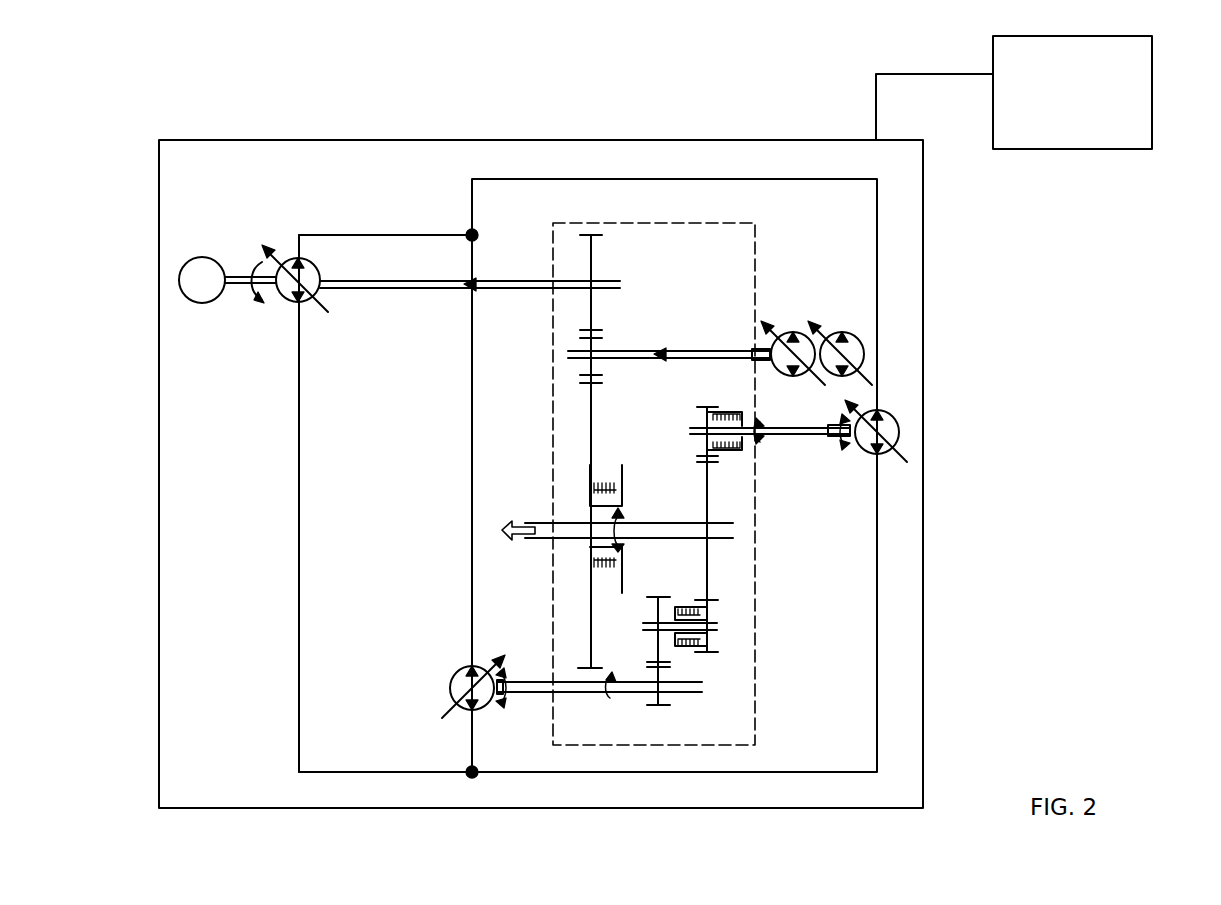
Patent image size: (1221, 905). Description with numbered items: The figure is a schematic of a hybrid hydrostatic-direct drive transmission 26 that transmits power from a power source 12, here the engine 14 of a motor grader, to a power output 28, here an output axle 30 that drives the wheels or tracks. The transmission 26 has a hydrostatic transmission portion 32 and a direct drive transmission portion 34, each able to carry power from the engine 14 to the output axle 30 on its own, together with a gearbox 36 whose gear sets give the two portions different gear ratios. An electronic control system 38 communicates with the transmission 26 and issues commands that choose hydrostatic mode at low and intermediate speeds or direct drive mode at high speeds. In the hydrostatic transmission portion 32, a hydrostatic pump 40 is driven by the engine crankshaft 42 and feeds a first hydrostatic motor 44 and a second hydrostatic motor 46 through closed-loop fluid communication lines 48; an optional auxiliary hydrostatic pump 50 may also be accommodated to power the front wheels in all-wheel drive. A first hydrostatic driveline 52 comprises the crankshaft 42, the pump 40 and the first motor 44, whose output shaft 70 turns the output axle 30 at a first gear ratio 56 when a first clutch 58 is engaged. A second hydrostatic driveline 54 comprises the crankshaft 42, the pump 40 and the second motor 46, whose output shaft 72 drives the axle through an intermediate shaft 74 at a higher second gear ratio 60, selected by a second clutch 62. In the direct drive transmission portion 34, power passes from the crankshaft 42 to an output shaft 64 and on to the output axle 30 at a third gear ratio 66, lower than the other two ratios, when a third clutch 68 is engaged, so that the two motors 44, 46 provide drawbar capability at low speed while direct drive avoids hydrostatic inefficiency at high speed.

The power source 12 is at (196, 262).
The engine 14 is at (222, 268).
The hybrid hydrostatic-direct drive transmission 26 is at (536, 137).
The power output 28 is at (526, 522).
The output axle 30 is at (512, 523).
The hydrostatic transmission portion 32 is at (384, 212).
The direct drive transmission portion 34 is at (524, 266).
The gearbox 36 is at (762, 246).
The electronic control system 38 is at (1152, 98).
The hydrostatic pump 40 is at (314, 276).
The engine crankshaft 42 is at (238, 290).
The first hydrostatic motor 44 is at (882, 408).
The second hydrostatic motor 46 is at (450, 689).
The fluid communication lines 48 is at (672, 180).
The auxiliary hydrostatic pump 50 is at (796, 330).
The first hydrostatic driveline 52 is at (860, 472).
The second hydrostatic driveline 54 is at (440, 666).
The first gear ratio 56 is at (684, 463).
The first clutch 58 is at (726, 410).
The second gear ratio 60 is at (726, 603).
The second clutch 62 is at (684, 607).
The output shaft 64 is at (394, 289).
The third gear ratio 66 is at (562, 380).
The third clutch 68 is at (600, 488).
The output shaft 70 is at (782, 435).
The output shaft 72 is at (532, 698).
The intermediate shaft 74 is at (712, 627).